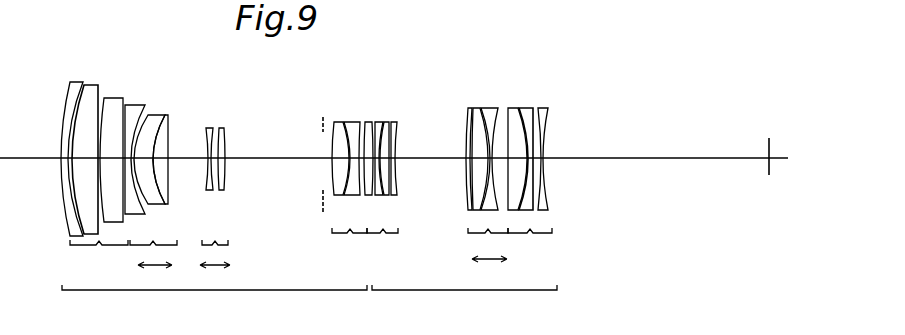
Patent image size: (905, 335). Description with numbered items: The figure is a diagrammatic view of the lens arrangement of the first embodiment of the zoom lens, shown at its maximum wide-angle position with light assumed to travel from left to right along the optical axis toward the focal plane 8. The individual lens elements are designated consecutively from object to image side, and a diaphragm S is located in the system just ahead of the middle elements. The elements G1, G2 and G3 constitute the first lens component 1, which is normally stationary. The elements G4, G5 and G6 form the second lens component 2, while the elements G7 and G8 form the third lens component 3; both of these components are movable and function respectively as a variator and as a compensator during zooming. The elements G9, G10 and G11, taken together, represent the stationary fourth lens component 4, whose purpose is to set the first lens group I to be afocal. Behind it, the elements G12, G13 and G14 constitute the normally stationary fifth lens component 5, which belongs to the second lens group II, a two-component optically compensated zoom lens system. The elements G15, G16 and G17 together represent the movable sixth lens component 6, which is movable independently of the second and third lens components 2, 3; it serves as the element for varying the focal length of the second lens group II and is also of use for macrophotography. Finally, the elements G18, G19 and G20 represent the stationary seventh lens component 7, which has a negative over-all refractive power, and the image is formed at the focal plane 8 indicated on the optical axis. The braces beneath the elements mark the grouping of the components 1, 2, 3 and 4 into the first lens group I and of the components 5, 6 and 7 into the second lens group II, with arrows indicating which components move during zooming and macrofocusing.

The first lens element G1 is at (72, 82).
The second lens element G2 is at (90, 85).
The third lens element G3 is at (112, 98).
The fourth lens element G4 is at (134, 105).
The fifth lens element G5 is at (154, 115).
The sixth lens element G6 is at (167, 115).
The seventh lens element G7 is at (208, 128).
The eighth lens element G8 is at (222, 128).
The ninth lens element G9 is at (336, 122).
The tenth lens element G10 is at (343, 122).
The eleventh lens element G11 is at (367, 122).
The twelfth lens element G12 is at (378, 122).
The thirteenth lens element G13 is at (388, 122).
The fourteenth lens element G14 is at (394, 122).
The fifteenth lens element G15 is at (468, 108).
The sixteenth lens element G16 is at (474, 108).
The seventeenth lens element G17 is at (497, 108).
The eighteenth lens element G18 is at (515, 108).
The nineteenth lens element G19 is at (530, 108).
The twentieth lens element G20 is at (548, 108).
The diaphragm S is at (323, 117).
The focal plane 8 is at (769, 138).
The first lens component 1 is at (89, 155).
The second lens component 2 is at (154, 161).
The third lens component 3 is at (216, 176).
The fourth lens component 4 is at (351, 156).
The fifth lens component 5 is at (400, 155).
The sixth lens component 6 is at (476, 164).
The seventh lens component 7 is at (540, 159).
The first lens group I is at (242, 181).
The second lens group II is at (473, 189).